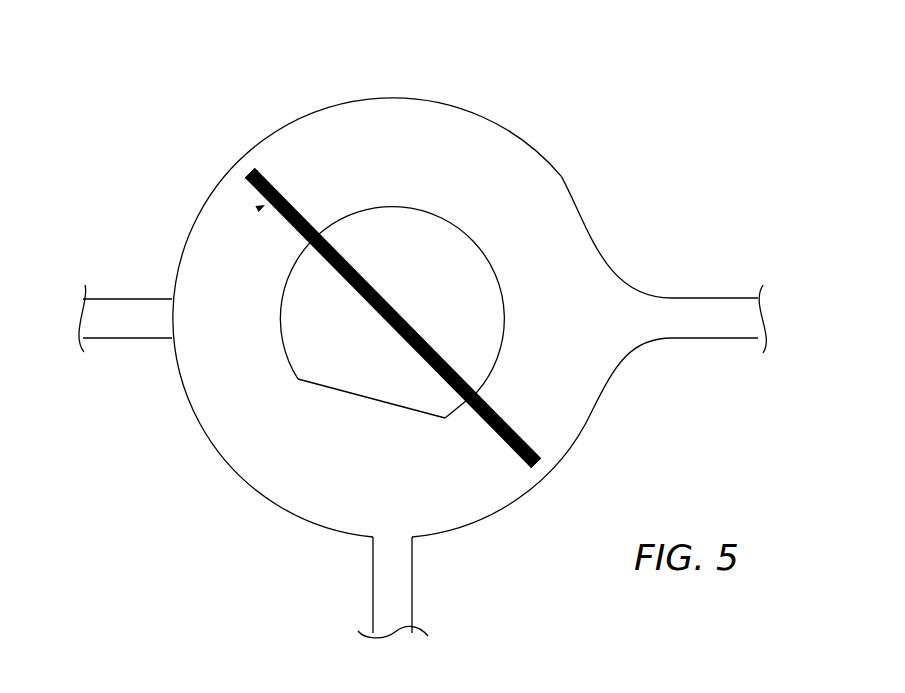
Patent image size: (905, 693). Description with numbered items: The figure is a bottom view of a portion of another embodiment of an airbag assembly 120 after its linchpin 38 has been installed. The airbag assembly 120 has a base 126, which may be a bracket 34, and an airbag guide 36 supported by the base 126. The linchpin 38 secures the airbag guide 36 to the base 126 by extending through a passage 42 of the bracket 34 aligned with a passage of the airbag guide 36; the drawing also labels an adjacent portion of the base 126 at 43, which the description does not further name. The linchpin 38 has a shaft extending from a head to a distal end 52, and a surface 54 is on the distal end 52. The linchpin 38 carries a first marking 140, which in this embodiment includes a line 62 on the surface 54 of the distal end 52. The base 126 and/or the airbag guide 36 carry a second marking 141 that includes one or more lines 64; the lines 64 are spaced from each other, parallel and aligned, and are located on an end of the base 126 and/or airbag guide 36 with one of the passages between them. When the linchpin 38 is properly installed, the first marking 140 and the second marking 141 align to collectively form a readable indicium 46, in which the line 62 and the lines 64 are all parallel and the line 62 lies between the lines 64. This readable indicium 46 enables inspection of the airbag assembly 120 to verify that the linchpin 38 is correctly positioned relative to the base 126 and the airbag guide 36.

The airbag assembly 120 is at (145, 80).
The base 126 is at (657, 138).
The bracket 34 is at (537, 148).
The airbag guide 36 is at (133, 308).
The passage 42 is at (484, 254).
The transition wall 43 is at (572, 253).
The readable indicium 46 is at (265, 205).
The linchpin 38 is at (310, 337).
The distal end 52 is at (337, 352).
The surface 54 is at (365, 370).
The line 62 is at (350, 260).
The first marking 140 is at (387, 300).
The lines 64 is at (292, 208).
The second marking 141 is at (266, 174).